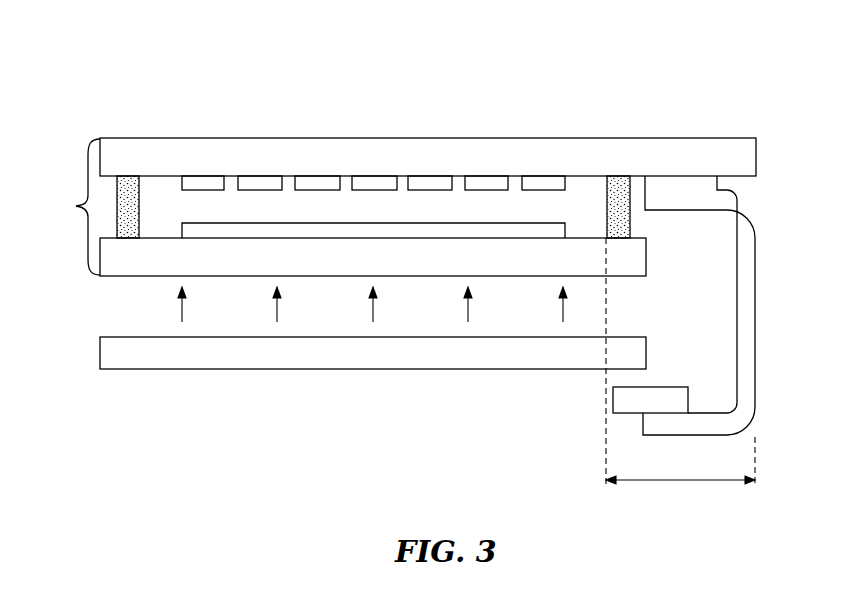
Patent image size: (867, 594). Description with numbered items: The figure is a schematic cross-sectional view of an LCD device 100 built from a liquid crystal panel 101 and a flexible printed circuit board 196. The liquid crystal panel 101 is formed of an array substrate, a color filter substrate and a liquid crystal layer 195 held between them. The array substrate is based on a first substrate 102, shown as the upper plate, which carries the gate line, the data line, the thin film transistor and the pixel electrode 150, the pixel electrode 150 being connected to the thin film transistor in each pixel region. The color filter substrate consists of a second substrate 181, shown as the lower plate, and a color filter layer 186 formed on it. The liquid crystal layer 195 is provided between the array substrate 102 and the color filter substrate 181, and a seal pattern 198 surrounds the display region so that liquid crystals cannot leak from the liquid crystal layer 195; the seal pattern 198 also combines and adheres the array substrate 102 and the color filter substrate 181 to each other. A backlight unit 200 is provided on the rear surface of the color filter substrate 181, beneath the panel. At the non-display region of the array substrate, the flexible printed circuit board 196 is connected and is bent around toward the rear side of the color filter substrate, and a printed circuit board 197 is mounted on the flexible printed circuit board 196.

The LCD device 100 is at (700, 108).
The liquid crystal panel 101 is at (399, 200).
The first substrate 102 is at (570, 147).
The pixel electrode 150 is at (205, 178).
The second substrate 181 is at (637, 263).
The color filter layer 186 is at (225, 228).
The liquid crystal layer 195 is at (589, 217).
The seal pattern 198 is at (631, 217).
The backlight unit 200 is at (115, 348).
The flexible printed circuit board 196 is at (653, 427).
The printed circuit board 197 is at (625, 393).